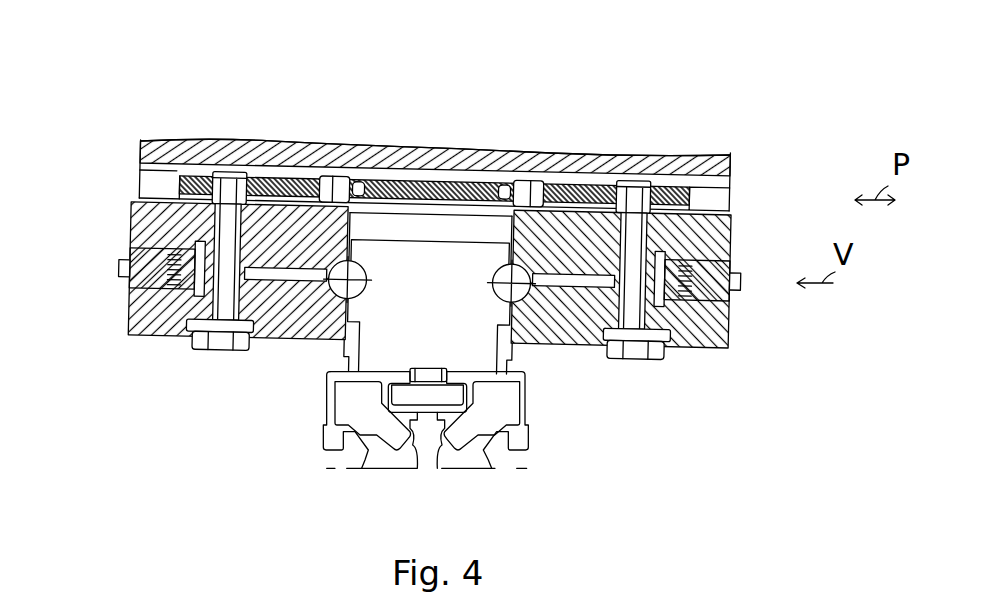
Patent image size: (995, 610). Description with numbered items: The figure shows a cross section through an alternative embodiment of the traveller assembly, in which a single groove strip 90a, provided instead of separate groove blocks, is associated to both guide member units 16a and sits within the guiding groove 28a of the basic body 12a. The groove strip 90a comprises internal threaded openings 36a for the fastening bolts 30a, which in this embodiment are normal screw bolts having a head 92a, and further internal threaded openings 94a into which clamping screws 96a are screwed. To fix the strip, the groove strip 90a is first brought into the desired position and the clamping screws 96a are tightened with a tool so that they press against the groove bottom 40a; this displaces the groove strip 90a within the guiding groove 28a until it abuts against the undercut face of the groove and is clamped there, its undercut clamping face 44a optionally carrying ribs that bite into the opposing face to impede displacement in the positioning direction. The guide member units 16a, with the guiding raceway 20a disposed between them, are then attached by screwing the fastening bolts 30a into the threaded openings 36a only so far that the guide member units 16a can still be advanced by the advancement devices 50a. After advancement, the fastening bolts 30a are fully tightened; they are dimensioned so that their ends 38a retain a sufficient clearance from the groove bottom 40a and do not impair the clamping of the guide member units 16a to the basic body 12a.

The basic body 12a is at (733, 163).
The guide member unit 16a is at (150, 334).
The guiding raceway 20a is at (520, 352).
The guiding groove 28a is at (733, 194).
The fastening bolt 30a is at (232, 350).
The internal threaded opening 36a is at (255, 183).
The end of fastening bolt 38a is at (222, 171).
The groove bottom 40a is at (203, 141).
The undercut clamping face 44a is at (183, 191).
The advancement device 50a is at (177, 300).
The groove strip 90a is at (466, 161).
The head 92a is at (240, 352).
The internal threaded opening 94a is at (363, 180).
The clamping screw 96a is at (333, 173).